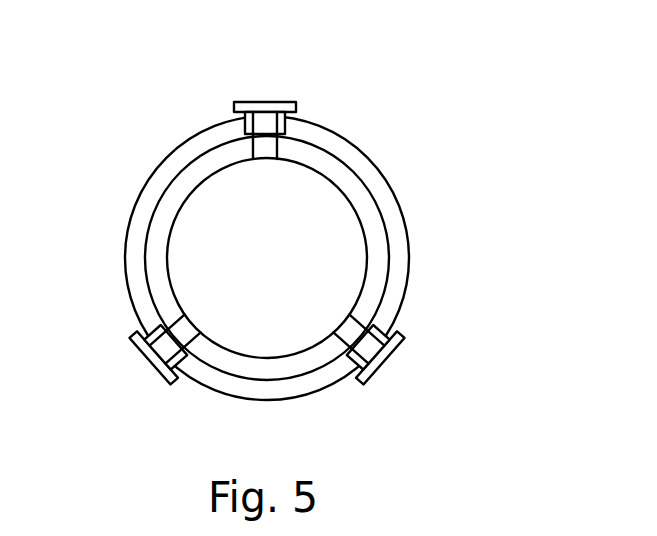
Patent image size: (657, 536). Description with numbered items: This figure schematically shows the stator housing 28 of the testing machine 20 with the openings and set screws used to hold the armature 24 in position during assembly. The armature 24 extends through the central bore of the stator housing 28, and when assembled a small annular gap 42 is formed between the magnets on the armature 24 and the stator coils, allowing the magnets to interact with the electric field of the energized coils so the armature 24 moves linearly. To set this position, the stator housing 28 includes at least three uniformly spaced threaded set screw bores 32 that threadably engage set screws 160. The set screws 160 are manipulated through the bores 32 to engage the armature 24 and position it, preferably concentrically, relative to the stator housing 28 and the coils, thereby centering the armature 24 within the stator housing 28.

The clamp assembly 20 is at (301, 230).
The armature 24 is at (267, 258).
The stator housing 28 is at (353, 154).
The threaded set screw bore 32 is at (288, 128).
The annular gap 42 is at (353, 188).
The set screw 160 is at (264, 101).